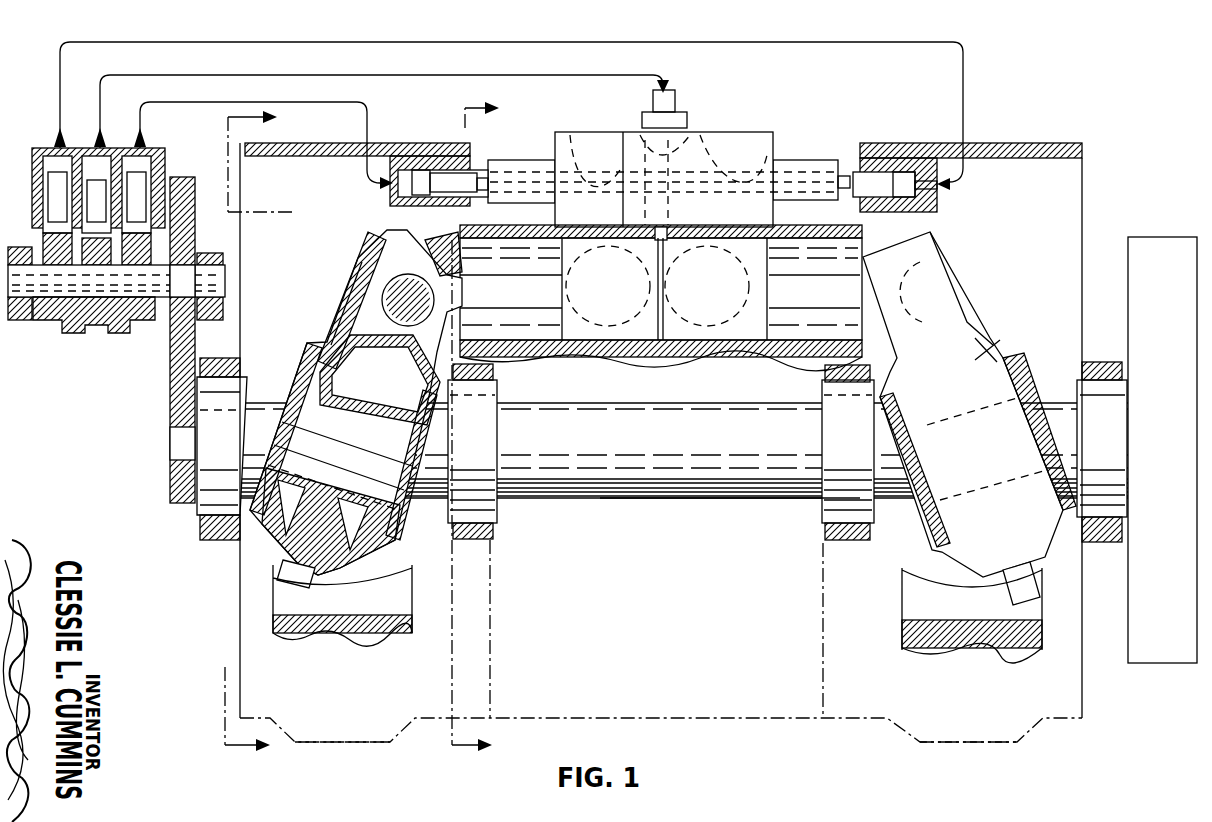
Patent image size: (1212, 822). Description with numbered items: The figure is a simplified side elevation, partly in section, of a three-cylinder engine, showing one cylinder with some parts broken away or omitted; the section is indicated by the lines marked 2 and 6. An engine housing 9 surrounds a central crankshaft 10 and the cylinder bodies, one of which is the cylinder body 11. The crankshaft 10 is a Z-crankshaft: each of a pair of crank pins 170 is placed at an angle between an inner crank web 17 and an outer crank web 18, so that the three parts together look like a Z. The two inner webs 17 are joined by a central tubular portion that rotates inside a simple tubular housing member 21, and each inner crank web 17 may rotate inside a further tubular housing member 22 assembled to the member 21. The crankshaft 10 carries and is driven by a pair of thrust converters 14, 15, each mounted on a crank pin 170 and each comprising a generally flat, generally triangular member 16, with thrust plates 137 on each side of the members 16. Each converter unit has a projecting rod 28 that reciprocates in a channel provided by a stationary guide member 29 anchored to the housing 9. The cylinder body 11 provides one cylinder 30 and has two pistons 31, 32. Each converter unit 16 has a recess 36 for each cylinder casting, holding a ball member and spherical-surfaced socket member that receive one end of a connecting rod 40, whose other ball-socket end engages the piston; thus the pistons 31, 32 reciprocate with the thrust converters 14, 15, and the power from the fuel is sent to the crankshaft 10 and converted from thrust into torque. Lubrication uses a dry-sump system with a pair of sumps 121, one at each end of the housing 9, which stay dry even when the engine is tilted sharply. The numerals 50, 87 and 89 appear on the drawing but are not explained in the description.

The section line 2- 2 is at (258, 428).
The section line 6- 6 is at (475, 427).
The engine housing 9 is at (320, 142).
The crankshaft 10 is at (735, 500).
The cylinder body 11 is at (865, 228).
The thrust converter 14 is at (990, 307).
The thrust converter 15 is at (353, 267).
The triangular member 16 is at (370, 307).
The inner crank web 17 is at (477, 456).
The outer crank web 18 is at (247, 442).
The tubular housing member 21 is at (768, 448).
The tubular housing member 22 is at (497, 532).
The projecting rod 28 is at (280, 594).
The stationary guide member 29 is at (412, 625).
The cylinder 30 is at (813, 325).
The piston 31 is at (633, 301).
The piston 32 is at (713, 301).
The recess 36 is at (428, 254).
The connecting rod 40 is at (522, 307).
The injector nozzle 50 is at (658, 357).
The fuel passage 87 is at (410, 200).
The fuel inlet 89 is at (400, 183).
The sump 121 is at (348, 743).
The thrust plate 137 is at (297, 353).
The crank pin 170 is at (373, 458).